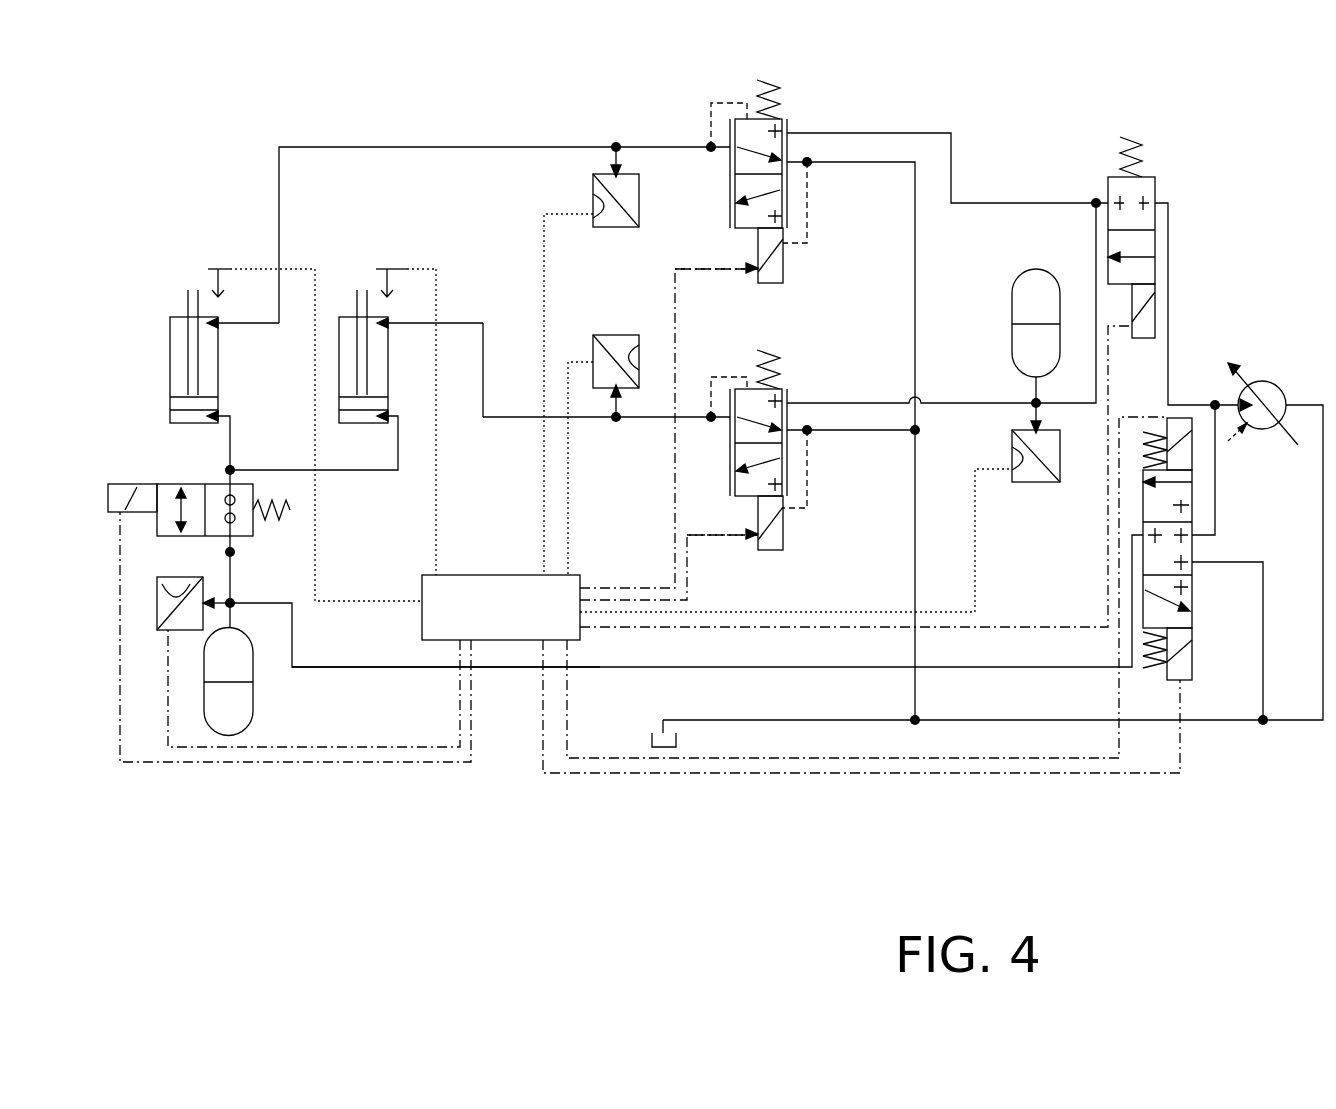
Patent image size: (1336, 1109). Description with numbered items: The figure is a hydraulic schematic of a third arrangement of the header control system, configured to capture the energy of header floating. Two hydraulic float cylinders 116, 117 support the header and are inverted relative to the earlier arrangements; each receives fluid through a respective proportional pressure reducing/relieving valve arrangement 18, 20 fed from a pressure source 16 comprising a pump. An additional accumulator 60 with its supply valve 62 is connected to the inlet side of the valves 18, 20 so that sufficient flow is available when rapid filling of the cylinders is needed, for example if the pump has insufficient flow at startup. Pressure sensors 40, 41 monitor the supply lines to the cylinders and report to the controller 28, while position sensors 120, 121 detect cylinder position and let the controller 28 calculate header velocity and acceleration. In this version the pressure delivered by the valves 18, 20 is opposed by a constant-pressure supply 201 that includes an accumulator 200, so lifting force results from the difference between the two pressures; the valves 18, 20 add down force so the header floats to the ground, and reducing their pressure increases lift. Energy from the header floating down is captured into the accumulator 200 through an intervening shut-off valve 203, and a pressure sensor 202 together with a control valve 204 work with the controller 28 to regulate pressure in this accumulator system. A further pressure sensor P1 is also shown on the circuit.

The pressure source 16 is at (1261, 372).
The valve arrangement 18 is at (810, 244).
The valve arrangement 20 is at (801, 390).
The controller 28 is at (513, 573).
The pressure sensor 40 is at (612, 220).
The pressure sensor 41 is at (605, 370).
The additional accumulator 60 is at (1012, 305).
The supply valve 62 is at (1158, 187).
The hydraulic float cylinder 116 is at (170, 371).
The hydraulic float cylinder 117 is at (339, 370).
The position sensor 120 is at (203, 281).
The position sensor 121 is at (392, 279).
The accumulator 200 is at (248, 697).
The supply 201 is at (350, 636).
The pressure sensor 202 is at (145, 613).
The shut-off valve 203 is at (157, 540).
The control valve 204 is at (1195, 603).
The pressure sensor P1 is at (1036, 453).